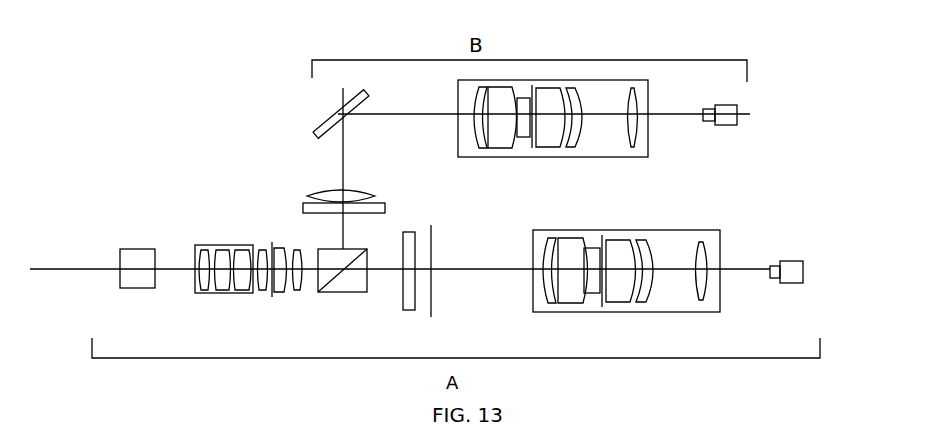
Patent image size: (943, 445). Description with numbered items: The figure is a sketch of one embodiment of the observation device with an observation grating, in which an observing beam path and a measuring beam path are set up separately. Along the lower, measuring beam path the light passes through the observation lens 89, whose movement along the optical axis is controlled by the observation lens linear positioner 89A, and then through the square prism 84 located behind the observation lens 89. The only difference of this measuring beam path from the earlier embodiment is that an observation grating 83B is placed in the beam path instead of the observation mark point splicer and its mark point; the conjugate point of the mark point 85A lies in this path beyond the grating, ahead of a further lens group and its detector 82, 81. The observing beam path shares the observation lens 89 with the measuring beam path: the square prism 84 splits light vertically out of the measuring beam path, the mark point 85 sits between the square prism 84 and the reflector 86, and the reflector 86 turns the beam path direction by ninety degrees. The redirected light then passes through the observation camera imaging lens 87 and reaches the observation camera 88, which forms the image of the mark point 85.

The light receiving element (detector) 81 is at (785, 260).
The condenser lens group 82 is at (693, 230).
The observation grating 83B is at (408, 300).
The square prism 84 is at (328, 258).
The mark point 85 is at (375, 198).
The conjugate point of mark point 85A is at (431, 269).
The reflector 86 is at (316, 134).
The observation camera imaging lens 87 is at (595, 90).
The observation camera 88 is at (735, 108).
The observation lens 89 is at (197, 247).
The observation lens linear positioner 89A is at (135, 248).